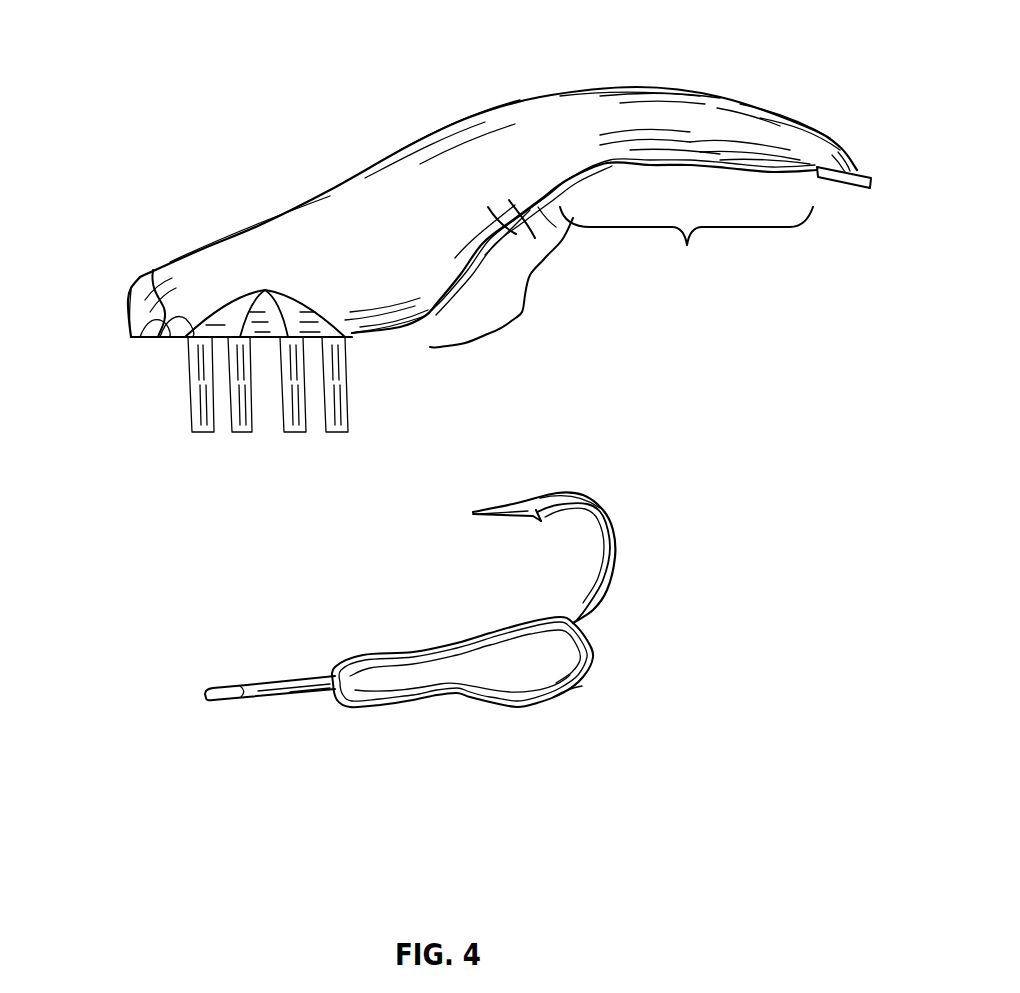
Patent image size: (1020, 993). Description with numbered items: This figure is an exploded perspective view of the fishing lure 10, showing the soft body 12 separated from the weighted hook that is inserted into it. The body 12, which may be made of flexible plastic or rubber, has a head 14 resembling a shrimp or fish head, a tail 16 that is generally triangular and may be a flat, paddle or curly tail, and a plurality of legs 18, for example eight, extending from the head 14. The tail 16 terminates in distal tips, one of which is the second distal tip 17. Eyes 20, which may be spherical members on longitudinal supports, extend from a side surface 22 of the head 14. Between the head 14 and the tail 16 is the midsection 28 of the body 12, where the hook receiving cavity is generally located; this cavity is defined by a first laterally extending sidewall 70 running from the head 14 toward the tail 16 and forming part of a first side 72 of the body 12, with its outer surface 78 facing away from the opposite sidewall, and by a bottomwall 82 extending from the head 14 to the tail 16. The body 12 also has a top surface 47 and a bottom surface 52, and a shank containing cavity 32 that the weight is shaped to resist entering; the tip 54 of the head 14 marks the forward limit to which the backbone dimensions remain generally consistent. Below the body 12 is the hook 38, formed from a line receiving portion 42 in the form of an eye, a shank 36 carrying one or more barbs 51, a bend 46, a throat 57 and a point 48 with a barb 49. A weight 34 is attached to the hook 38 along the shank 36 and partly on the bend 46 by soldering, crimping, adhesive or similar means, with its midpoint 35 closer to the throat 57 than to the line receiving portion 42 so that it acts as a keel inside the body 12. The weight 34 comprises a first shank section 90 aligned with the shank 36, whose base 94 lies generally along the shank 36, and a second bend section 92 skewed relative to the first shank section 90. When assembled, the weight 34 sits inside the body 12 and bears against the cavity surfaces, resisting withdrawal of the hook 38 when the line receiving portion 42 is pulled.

The fishing lure 10 is at (228, 124).
The body 12 is at (330, 190).
The head 14 is at (400, 368).
The tail 16 is at (686, 243).
The second distal tip 17 is at (860, 172).
The legs 18 is at (265, 297).
The eyes 20 is at (153, 272).
The side surface 22 is at (578, 139).
The midsection 28 is at (501, 285).
The shank containing cavity 32 is at (125, 326).
The weight 34 is at (470, 740).
The midpoint of the weight 35 is at (498, 680).
The shank 36 is at (273, 680).
The hook 38 is at (572, 500).
The line receiving portion 42 is at (213, 700).
The bend 46 is at (616, 541).
The top surface 47 is at (402, 148).
The point 48 is at (473, 512).
The barb 49 is at (533, 520).
The barbs on the shank 51 is at (300, 696).
The bottom surface 52 is at (492, 250).
The tip of the head 54 is at (131, 306).
The throat 57 is at (473, 517).
The first laterally extending sidewall 70 is at (508, 230).
The first side 72 is at (552, 230).
The outer surface of the first sidewall 78 is at (508, 240).
The bottomwall 82 is at (381, 338).
The first shank section 90 is at (457, 717).
The second bend section 92 is at (607, 653).
The base 94 is at (553, 699).